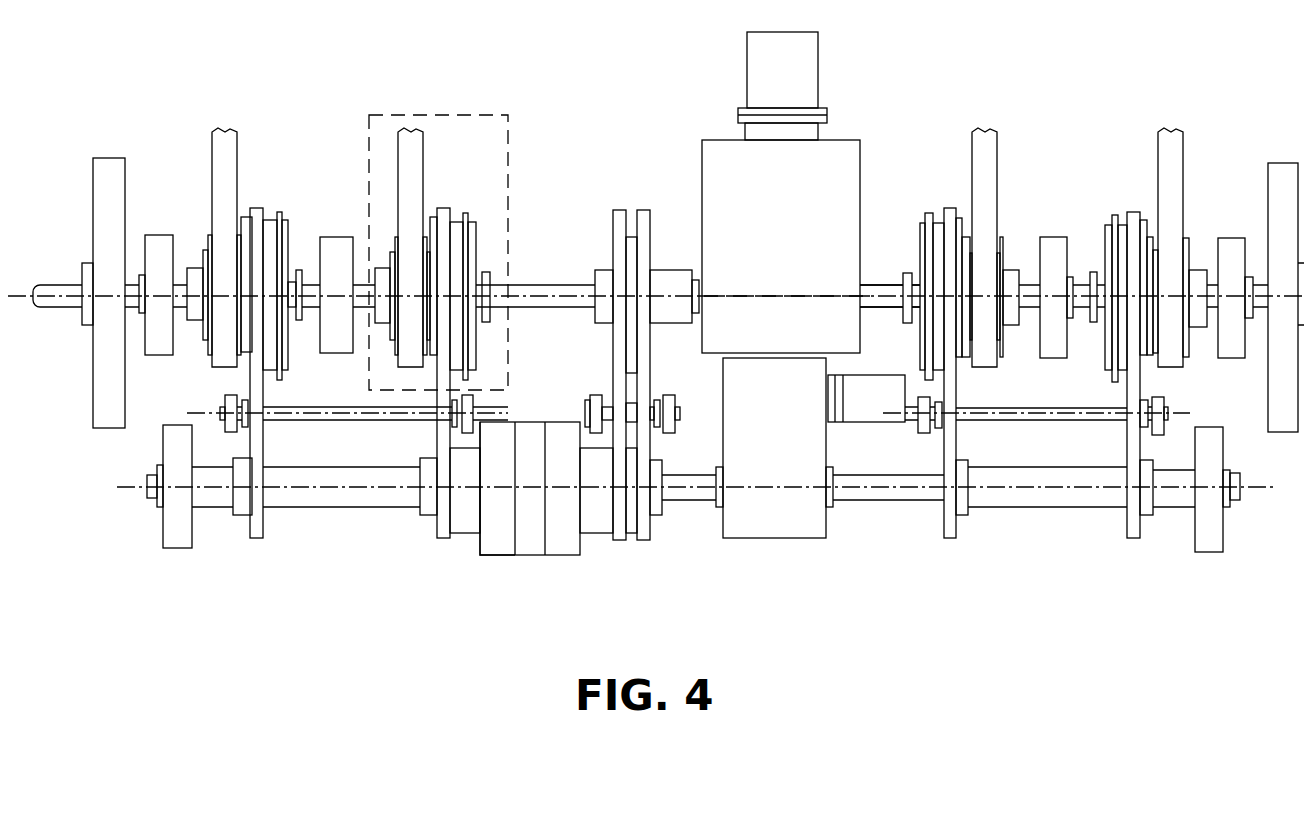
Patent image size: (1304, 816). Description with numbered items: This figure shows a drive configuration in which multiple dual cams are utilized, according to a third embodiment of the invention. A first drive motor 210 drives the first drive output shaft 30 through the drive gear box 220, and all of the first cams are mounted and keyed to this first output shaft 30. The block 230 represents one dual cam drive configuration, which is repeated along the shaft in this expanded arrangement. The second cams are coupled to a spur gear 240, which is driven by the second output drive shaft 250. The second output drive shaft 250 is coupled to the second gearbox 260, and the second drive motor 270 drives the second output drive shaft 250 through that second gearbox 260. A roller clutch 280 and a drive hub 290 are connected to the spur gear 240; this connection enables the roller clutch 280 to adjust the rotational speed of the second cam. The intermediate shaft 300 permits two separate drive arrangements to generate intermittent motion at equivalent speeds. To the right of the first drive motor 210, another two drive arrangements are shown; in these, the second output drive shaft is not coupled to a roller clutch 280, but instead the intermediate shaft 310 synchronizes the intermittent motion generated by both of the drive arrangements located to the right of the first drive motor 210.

The first drive output shaft 30 is at (878, 297).
The first drive motor 210 is at (817, 87).
The drive gear box 220 is at (863, 188).
The block 230 is at (453, 113).
The spur gear 240 is at (445, 217).
The second output drive shaft 250 is at (877, 490).
The second gearbox 260 is at (753, 532).
The second drive motor 270 is at (857, 418).
The roller clutch 280 is at (527, 542).
The drive hub 290 is at (483, 555).
The intermediate shaft 300 is at (370, 415).
The intermediate shaft 310 is at (1082, 415).